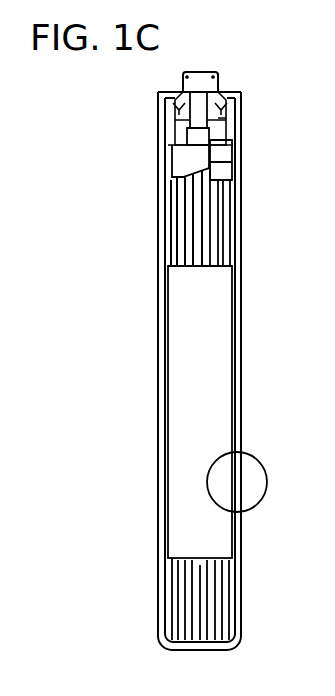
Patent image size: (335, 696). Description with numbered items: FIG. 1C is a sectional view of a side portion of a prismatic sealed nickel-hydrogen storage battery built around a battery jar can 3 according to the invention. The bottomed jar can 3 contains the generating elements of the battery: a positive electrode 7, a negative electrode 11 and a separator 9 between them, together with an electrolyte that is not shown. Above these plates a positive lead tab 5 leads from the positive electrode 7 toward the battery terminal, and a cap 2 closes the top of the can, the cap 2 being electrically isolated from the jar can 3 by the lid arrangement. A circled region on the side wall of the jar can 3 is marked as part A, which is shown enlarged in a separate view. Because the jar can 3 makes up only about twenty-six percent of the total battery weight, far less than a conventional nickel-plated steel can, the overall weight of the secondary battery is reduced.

The cap 2 is at (199, 72).
The battery jar can 3 is at (240, 319).
The positive lead tab 5 is at (222, 153).
The positive electrode 7 is at (220, 210).
The separator 9 is at (225, 237).
The negative electrode 11 is at (228, 262).
The part A is at (267, 482).